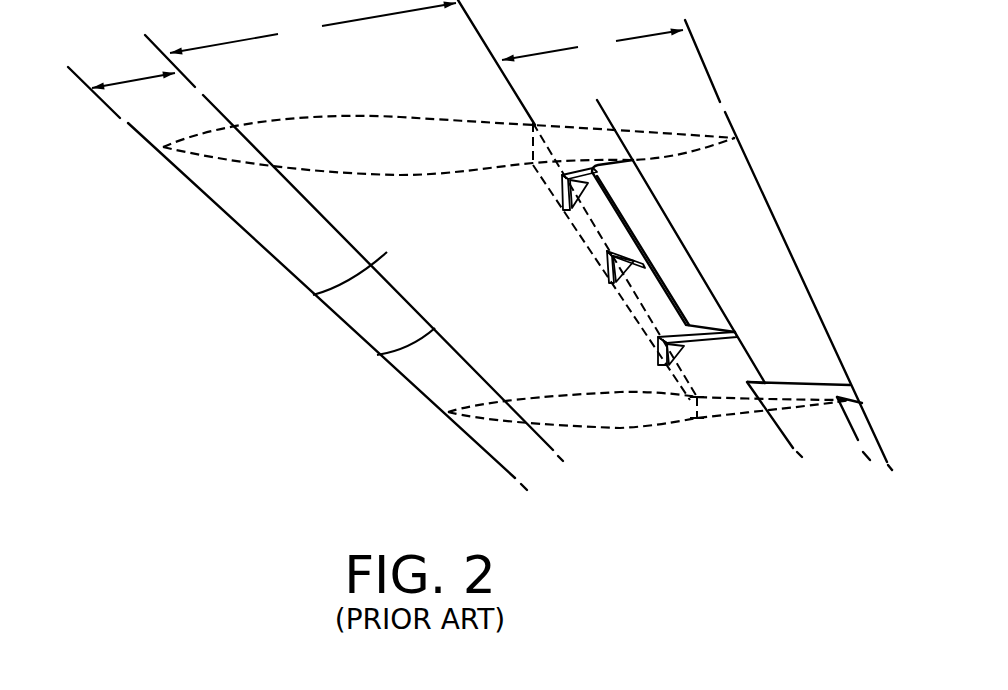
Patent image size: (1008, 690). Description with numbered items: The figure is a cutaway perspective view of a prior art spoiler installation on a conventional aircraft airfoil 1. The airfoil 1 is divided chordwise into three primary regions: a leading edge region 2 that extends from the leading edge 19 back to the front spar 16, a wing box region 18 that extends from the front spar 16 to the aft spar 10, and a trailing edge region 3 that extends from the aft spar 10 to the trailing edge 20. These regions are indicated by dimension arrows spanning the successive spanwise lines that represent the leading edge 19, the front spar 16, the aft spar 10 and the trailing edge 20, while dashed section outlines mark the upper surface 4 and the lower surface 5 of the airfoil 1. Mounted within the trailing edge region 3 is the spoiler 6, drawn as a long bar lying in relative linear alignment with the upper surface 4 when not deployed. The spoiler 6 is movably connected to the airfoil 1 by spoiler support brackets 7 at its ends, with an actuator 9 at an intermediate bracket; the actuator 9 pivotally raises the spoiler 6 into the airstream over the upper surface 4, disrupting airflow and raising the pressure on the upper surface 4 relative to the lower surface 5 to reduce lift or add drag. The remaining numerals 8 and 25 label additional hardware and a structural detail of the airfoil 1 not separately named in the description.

The airfoil 1 is at (228, 277).
The leading edge region 2 is at (133, 68).
The trailing edge region 3 is at (592, 43).
The upper surface 4 is at (357, 118).
The lower surface 5 is at (597, 430).
The spoiler 6 is at (653, 223).
The spoiler support bracket 7 is at (557, 188).
The intermediate clip 8 is at (607, 263).
The actuator 9 is at (628, 267).
The aft spar 10 is at (533, 163).
The front spar 16 is at (377, 355).
The wing box region 18 is at (313, 28).
The leading edge 19 is at (238, 229).
The trailing edge 20 is at (785, 237).
The splice joint 25 is at (313, 295).